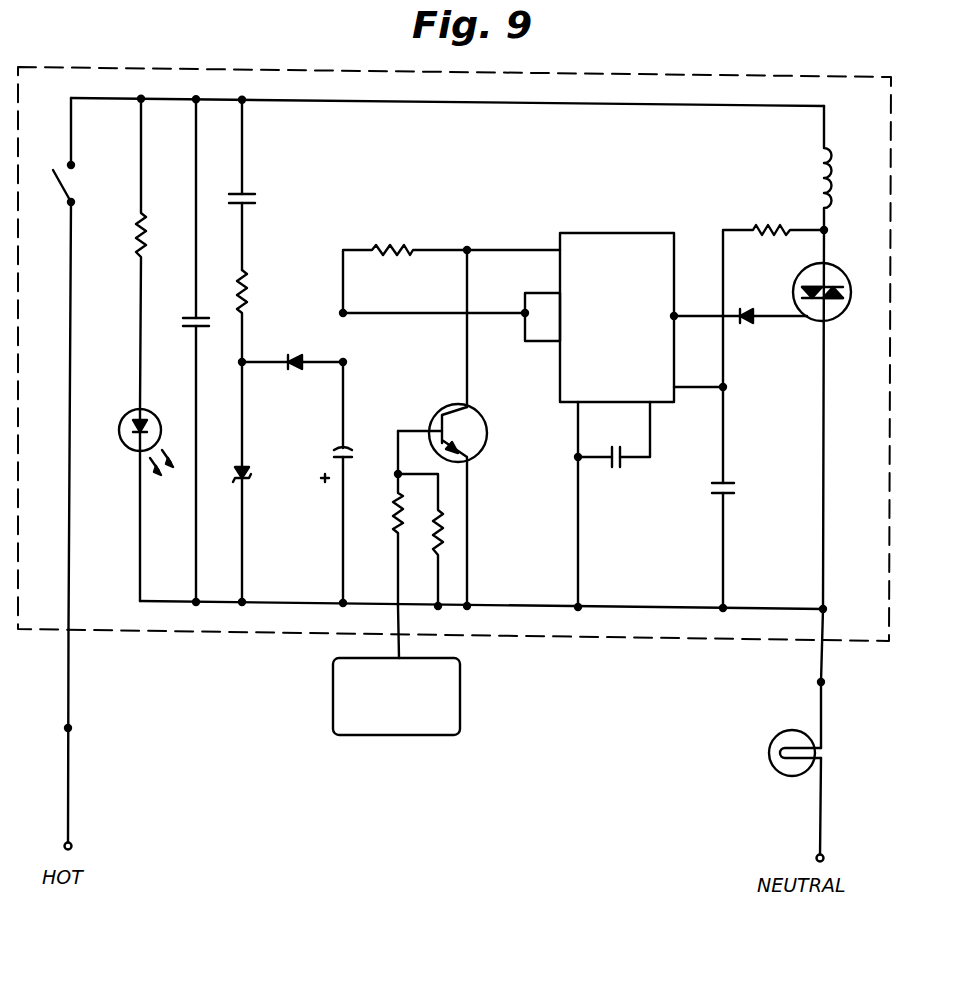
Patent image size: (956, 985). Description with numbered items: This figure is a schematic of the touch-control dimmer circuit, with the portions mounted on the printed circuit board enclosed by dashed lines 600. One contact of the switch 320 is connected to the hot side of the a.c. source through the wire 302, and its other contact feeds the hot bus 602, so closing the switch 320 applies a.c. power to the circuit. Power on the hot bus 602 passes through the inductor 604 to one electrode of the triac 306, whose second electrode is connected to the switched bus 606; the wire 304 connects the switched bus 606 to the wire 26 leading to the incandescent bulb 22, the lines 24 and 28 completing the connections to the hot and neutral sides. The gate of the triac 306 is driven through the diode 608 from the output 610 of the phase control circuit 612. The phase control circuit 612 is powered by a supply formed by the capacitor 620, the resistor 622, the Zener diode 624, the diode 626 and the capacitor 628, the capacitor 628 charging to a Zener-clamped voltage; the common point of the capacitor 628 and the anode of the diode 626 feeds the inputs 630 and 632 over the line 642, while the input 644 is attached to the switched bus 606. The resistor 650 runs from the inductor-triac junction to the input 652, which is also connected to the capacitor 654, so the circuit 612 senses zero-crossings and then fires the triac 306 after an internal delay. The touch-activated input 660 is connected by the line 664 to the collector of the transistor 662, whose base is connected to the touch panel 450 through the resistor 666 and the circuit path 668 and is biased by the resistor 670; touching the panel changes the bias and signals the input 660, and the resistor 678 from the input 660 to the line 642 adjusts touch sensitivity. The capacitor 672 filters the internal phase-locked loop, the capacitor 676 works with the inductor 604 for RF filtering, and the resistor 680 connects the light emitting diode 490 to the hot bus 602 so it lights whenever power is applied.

The dashed lines 600 is at (749, 75).
The hot bus 602 is at (442, 103).
The inductor 604 is at (820, 163).
The resistor 650 is at (770, 228).
The phase control circuit 612 is at (640, 233).
The input 660 is at (556, 250).
The line 664 is at (486, 250).
The resistor 678 is at (390, 250).
The input 630 is at (560, 293).
The input 632 is at (560, 341).
The line 642 is at (418, 313).
The output 610 is at (678, 316).
The diode 608 is at (748, 321).
The triac 306 is at (833, 318).
The capacitor 620 is at (258, 198).
The resistor 622 is at (248, 300).
The diode 626 is at (294, 352).
The capacitor 628 is at (340, 446).
The Zener diode 624 is at (250, 476).
The switch 320 is at (65, 187).
The resistor 680 is at (137, 238).
The capacitor 676 is at (185, 322).
The light emitting diode 490 is at (125, 415).
The transistor 662 is at (477, 452).
The input 644 is at (575, 404).
The input 652 is at (674, 392).
The capacitor 654 is at (735, 488).
The capacitor 672 is at (616, 469).
The resistor 666 is at (396, 514).
The resistor 670 is at (441, 524).
The circuit path 668 is at (397, 620).
The switched bus 606 is at (530, 606).
The wire 302 is at (68, 672).
The wire 304 is at (821, 655).
The wire 26 is at (821, 705).
The incandescent bulb 22 is at (769, 763).
The hot line 24 is at (68, 782).
The neutral line 28 is at (820, 803).
The touch panel 450 is at (460, 715).